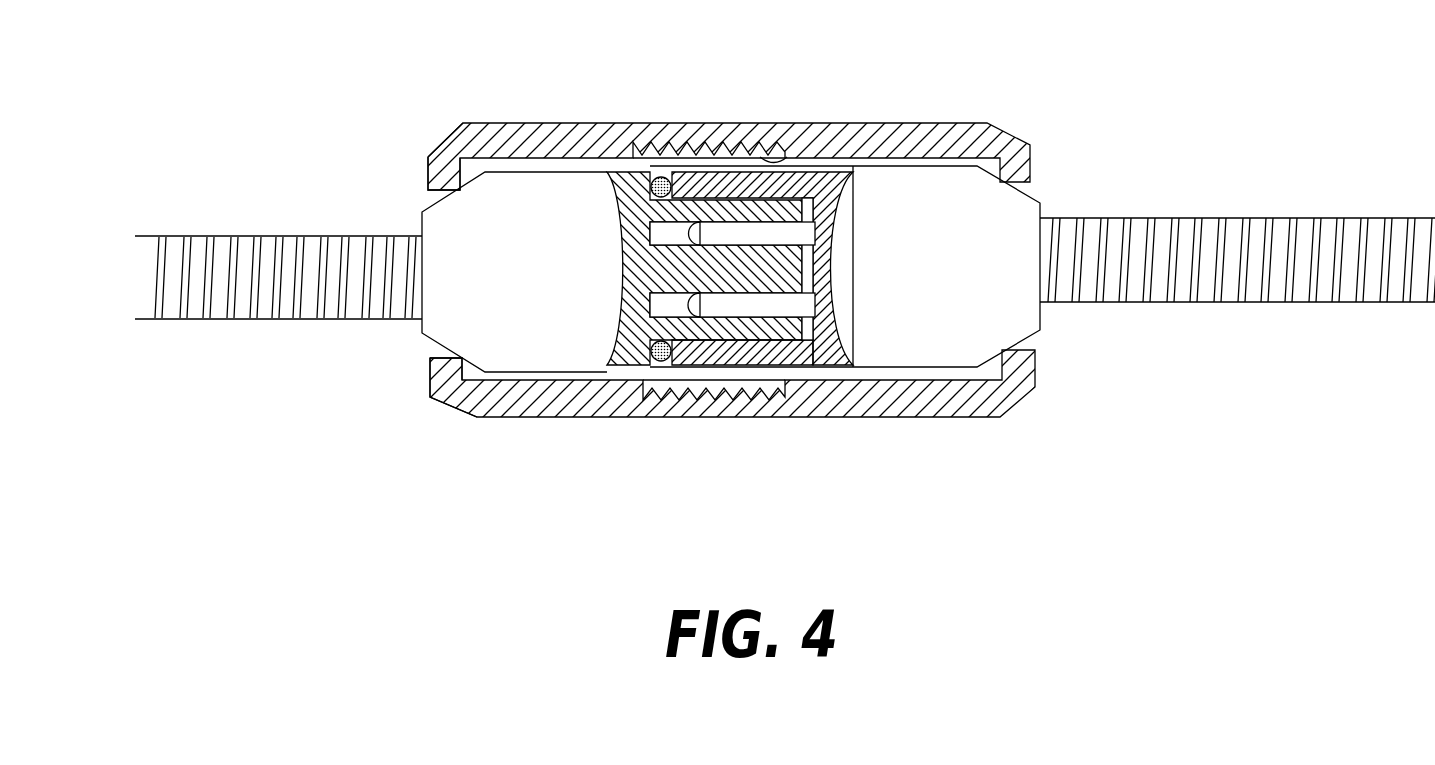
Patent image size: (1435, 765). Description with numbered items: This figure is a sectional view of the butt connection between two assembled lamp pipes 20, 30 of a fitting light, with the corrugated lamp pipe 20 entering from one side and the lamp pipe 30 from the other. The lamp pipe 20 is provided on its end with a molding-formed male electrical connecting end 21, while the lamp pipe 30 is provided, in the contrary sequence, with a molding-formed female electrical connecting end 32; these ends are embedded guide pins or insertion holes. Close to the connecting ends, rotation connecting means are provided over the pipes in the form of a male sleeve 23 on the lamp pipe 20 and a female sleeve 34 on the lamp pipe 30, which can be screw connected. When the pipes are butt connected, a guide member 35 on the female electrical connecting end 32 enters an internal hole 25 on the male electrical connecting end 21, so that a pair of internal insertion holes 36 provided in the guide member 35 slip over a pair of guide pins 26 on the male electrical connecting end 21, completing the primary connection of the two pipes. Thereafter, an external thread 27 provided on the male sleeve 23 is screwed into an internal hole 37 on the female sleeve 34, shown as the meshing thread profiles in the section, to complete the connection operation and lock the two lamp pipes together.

The lamp pipe 20 is at (1178, 247).
The lamp pipe 30 is at (290, 264).
The female electrical connecting end 32 is at (531, 217).
The male electrical connecting end 21 is at (897, 200).
The male sleeve 23 is at (928, 398).
The female sleeve 34 is at (520, 408).
The internal hole 37 is at (722, 140).
The external thread 27 is at (787, 157).
The internal insertion holes 36 is at (793, 228).
The guide pins 26 is at (675, 308).
The guide member 35 is at (684, 347).
The internal hole 25 is at (758, 363).